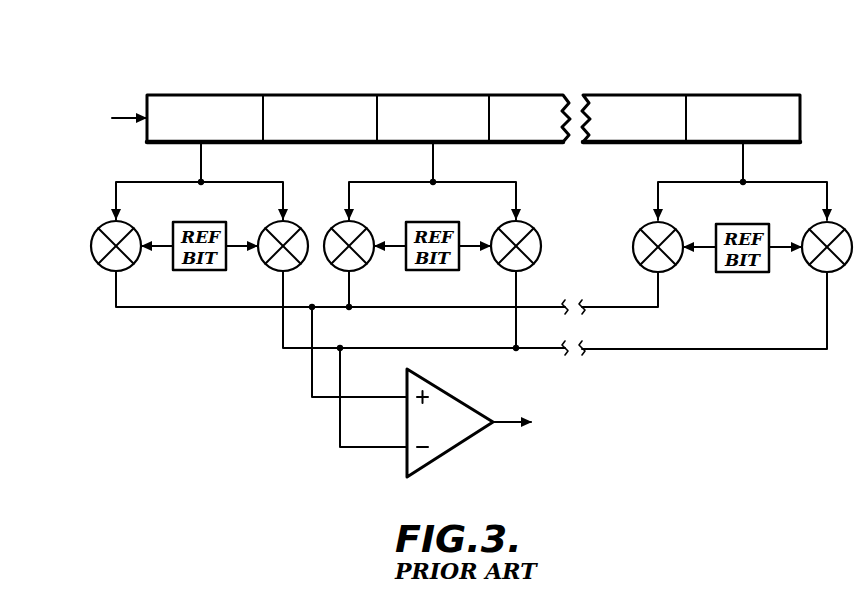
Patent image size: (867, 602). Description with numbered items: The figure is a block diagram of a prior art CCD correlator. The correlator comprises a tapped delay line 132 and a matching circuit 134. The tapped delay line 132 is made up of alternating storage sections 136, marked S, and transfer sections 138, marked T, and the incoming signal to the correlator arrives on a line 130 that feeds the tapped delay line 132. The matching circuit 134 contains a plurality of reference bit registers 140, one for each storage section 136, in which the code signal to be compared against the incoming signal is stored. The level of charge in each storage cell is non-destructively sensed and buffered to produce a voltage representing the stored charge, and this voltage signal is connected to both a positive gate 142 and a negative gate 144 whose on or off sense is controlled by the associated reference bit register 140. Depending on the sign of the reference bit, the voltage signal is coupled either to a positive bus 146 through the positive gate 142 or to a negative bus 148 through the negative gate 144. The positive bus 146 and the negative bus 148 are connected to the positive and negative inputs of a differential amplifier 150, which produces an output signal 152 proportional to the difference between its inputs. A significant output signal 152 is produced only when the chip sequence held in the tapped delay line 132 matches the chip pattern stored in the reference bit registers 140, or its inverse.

The line 130 is at (114, 110).
The tapped delay line 132 is at (412, 80).
The matching circuit 134 is at (72, 212).
The storage section 136 is at (203, 94).
The transfer section 138 is at (318, 94).
The reference bit register 140 is at (200, 270).
The positive gate 142 is at (98, 266).
The negative gate 144 is at (292, 222).
The positive bus 146 is at (113, 308).
The negative bus 148 is at (282, 349).
The differential amplifier 150 is at (458, 392).
The output signal 152 is at (510, 425).